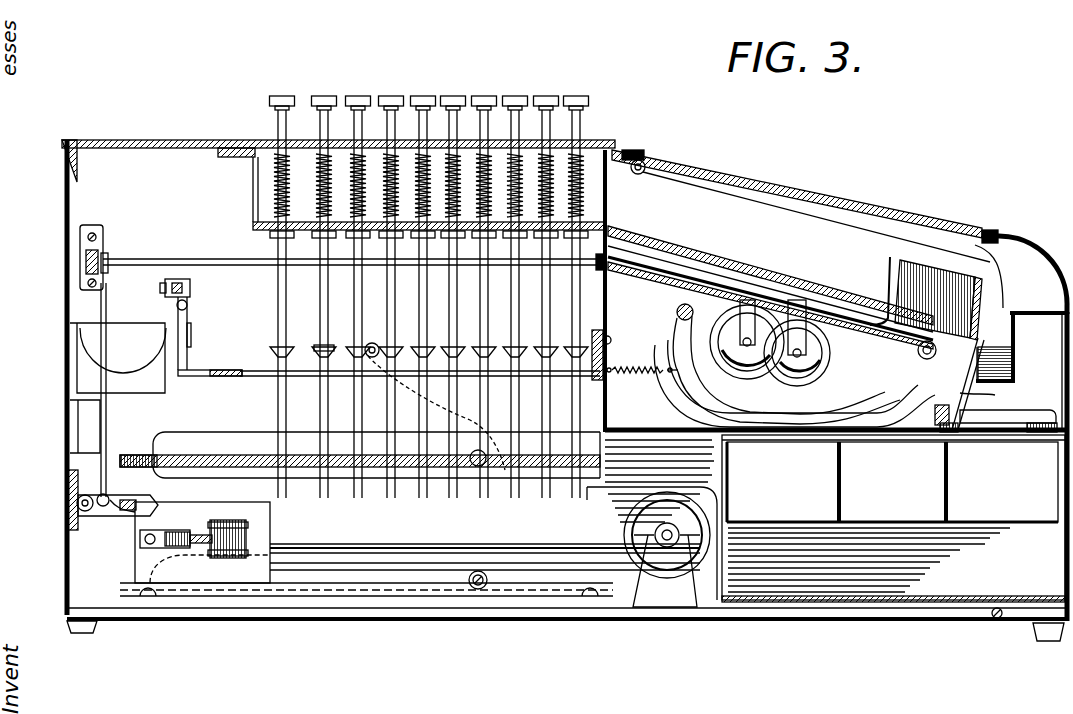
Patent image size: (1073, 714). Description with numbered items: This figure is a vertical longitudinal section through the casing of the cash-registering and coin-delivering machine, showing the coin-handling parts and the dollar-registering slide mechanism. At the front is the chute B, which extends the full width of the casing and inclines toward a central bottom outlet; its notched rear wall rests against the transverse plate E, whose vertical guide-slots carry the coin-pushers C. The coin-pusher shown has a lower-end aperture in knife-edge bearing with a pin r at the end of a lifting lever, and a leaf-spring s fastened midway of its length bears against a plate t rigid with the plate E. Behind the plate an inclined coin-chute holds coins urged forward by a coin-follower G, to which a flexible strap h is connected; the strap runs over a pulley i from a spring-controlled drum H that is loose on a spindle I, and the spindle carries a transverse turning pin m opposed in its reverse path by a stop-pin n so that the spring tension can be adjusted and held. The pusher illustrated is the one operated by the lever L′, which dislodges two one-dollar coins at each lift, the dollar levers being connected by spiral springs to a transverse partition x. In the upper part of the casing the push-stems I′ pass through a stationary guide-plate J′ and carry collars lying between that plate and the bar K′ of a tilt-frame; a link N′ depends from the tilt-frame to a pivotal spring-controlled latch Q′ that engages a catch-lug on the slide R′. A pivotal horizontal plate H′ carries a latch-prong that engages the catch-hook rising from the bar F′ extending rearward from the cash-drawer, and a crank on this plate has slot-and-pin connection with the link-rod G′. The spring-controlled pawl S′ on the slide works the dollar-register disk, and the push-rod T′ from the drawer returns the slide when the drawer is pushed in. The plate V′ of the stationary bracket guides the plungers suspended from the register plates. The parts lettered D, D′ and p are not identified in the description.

The push-stem I′ is at (388, 136).
The guide-plate J′ is at (268, 213).
The bar K′ is at (180, 253).
The link N′ is at (95, 305).
The link-rod G′ is at (167, 287).
The pivotal horizontal plate H′ is at (249, 356).
The bracket plate V′ is at (185, 463).
The latch Q′ is at (108, 514).
The slide R′ is at (263, 522).
The pawl S′ is at (202, 540).
The push-rod T′ is at (447, 545).
The slotted bar F′ is at (632, 469).
The casing D′ is at (893, 526).
The plate t is at (967, 402).
The cover D is at (873, 208).
The paper p is at (947, 317).
The spindle I is at (748, 300).
The transverse plate E is at (945, 374).
The coin-follower G is at (855, 303).
The transverse partition x is at (606, 386).
The dollar-coin-pusher lever L′ is at (794, 383).
The drum H is at (750, 366).
The stop-pin n is at (758, 349).
The flexible strap h is at (811, 353).
The pulley i is at (823, 353).
The turning pin m is at (818, 366).
The leaf-spring s is at (993, 346).
The chute B is at (1012, 372).
The coin-pusher C is at (975, 394).
The pin r is at (938, 412).